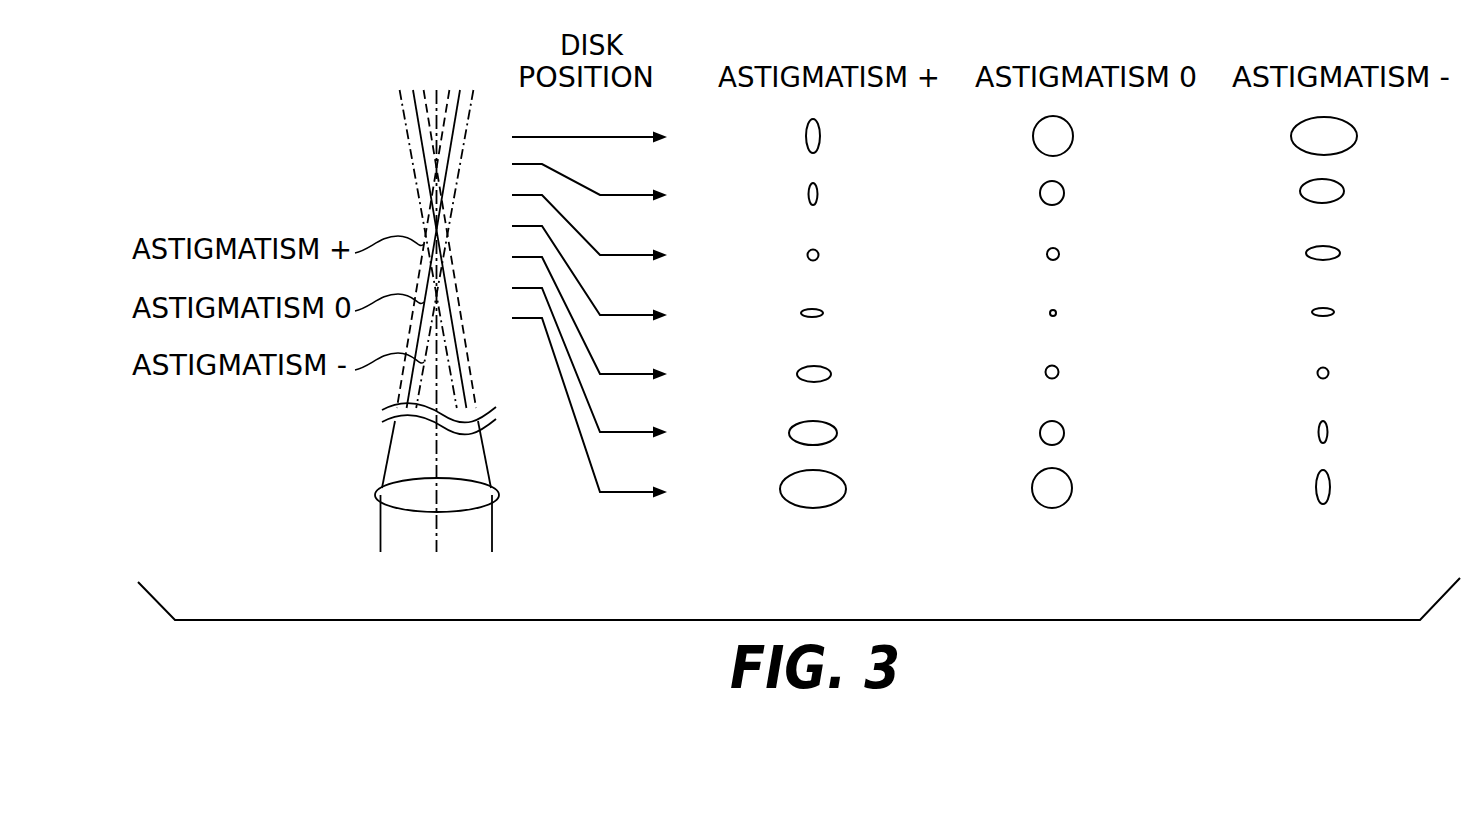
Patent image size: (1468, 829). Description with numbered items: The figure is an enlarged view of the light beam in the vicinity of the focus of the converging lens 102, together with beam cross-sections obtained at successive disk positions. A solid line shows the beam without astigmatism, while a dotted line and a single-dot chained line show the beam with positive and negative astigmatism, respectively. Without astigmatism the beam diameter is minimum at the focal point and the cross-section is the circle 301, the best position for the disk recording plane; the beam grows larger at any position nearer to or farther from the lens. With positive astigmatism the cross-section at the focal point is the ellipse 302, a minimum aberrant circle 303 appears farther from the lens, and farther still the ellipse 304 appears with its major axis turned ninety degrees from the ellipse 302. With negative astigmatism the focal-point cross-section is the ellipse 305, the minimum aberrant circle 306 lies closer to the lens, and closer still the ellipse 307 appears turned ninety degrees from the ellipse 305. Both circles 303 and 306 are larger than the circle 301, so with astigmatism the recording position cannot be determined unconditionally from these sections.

The converging lens 102 is at (387, 488).
The circular cross-section 301 is at (1056, 313).
The elliptical cross-section 302 is at (823, 313).
The circular cross-section 303 is at (819, 255).
The elliptical cross-section 304 is at (819, 194).
The elliptical cross-section 305 is at (1334, 312).
The circular cross-section 306 is at (1329, 373).
The elliptical cross-section 307 is at (1328, 432).